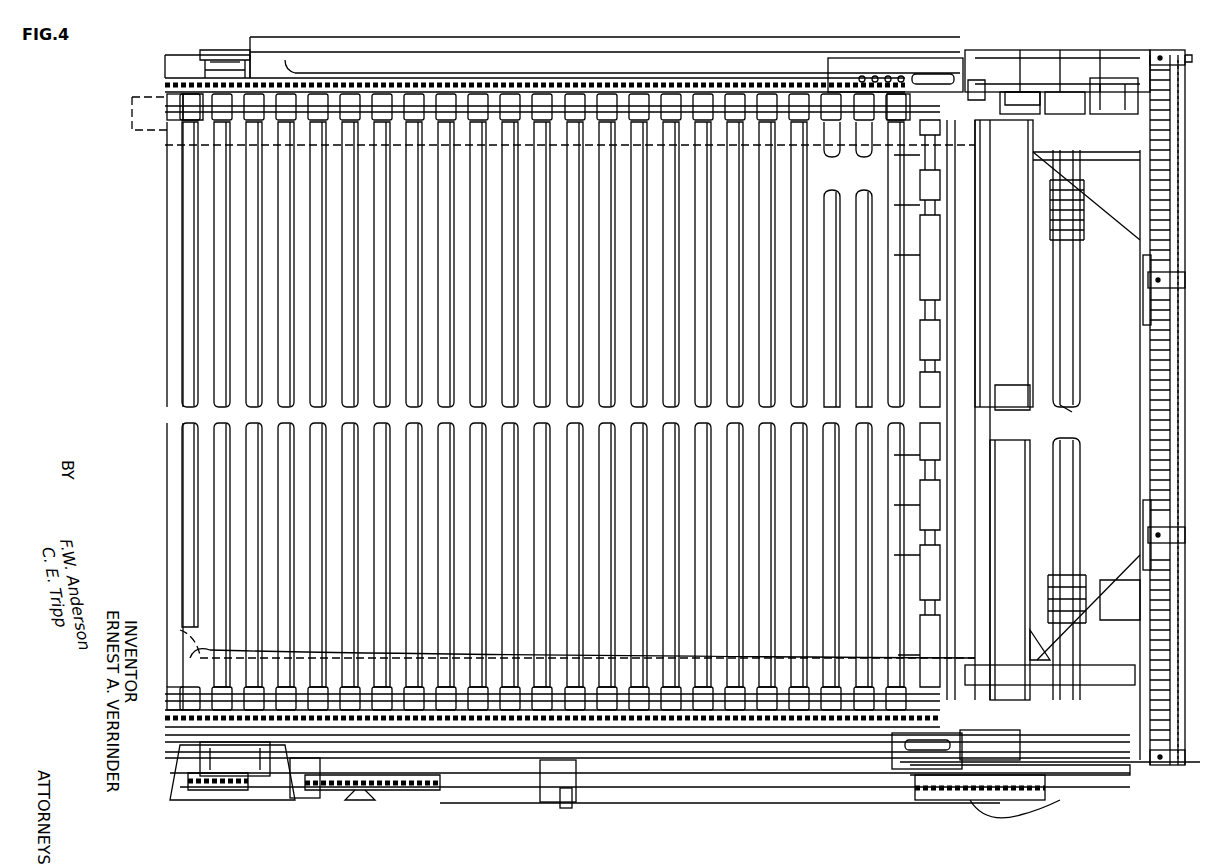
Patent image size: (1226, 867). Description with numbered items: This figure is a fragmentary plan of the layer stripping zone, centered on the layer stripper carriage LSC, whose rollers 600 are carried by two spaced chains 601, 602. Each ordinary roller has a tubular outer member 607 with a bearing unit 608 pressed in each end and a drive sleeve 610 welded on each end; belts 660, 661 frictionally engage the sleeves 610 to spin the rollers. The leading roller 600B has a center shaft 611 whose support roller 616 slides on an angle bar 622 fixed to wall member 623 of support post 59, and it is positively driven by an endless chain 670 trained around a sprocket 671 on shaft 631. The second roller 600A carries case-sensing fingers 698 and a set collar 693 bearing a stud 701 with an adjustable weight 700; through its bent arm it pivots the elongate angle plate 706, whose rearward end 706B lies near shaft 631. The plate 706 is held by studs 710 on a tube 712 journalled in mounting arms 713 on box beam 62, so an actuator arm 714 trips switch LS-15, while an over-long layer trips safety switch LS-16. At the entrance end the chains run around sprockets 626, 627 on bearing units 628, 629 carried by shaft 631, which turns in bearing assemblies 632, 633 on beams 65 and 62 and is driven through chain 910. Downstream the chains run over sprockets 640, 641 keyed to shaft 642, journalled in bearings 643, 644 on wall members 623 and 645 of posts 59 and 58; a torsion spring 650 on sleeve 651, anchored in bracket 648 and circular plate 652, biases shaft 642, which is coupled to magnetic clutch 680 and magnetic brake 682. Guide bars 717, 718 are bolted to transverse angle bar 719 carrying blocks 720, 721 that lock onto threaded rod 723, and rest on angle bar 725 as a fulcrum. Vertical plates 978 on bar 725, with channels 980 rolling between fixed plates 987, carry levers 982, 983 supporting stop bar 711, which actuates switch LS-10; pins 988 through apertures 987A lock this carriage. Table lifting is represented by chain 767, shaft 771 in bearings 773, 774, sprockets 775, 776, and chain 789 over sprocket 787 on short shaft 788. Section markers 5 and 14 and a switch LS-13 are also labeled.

The rollers 600 is at (600, 430).
The second roller 600A is at (872, 426).
The leading roller 600B is at (935, 424).
The tubular outer member 607 is at (370, 433).
The bearing unit 608 is at (418, 95).
The cylindrical drive sleeve 610 is at (605, 100).
The chain 601 is at (660, 100).
The beam 65 is at (738, 55).
The bearing assembly 632 is at (235, 52).
The bearing unit 628 is at (208, 70).
The sprocket 626 is at (195, 84).
The guide bar 717 is at (132, 125).
The belt 660 is at (200, 122).
The layer stripper carriage LSC is at (180, 237).
The fixed spaced plates 987 is at (845, 60).
The aligned apertures 987A is at (870, 76).
The set collar 693 is at (897, 95).
The pin 988 is at (935, 78).
The bearing 774 is at (1012, 58).
The channel 980 is at (972, 80).
The shaft 771 is at (1025, 92).
The vertical wall member 623 is at (1030, 75).
The support post 59 is at (1085, 62).
The bearing 643 is at (1085, 80).
The block 720 is at (1150, 52).
The vertical plates 978 is at (1020, 105).
The sprocket 640 is at (1068, 105).
The magnetic brake 682 is at (1110, 100).
The angle bar 622 is at (970, 120).
The lever 983 is at (1040, 118).
The circular plate 652 is at (1080, 160).
The weight 700 is at (870, 125).
The stud 701 is at (876, 125).
The support roller 616 is at (953, 125).
The center shaft 611 is at (940, 180).
The case-sensing fingers 698 is at (905, 255).
The torsion spring 650 is at (1078, 196).
The transverse angle bar 719 is at (1148, 268).
The block 721 is at (1143, 288).
The sleeve 651 is at (1072, 320).
The transverse angle bar 725 is at (1004, 410).
The stop bar 711 is at (978, 445).
The shaft 642 is at (1072, 412).
The threaded transverse rod 723 is at (1158, 440).
The magnetic clutch 680 is at (1035, 640).
The fixed bracket 648 is at (1128, 595).
The guide bar 718 is at (185, 640).
The belt 661 is at (195, 672).
The sprocket 671 is at (195, 730).
The sprocket 627 is at (200, 740).
The bearing unit 629 is at (205, 750).
The bearing assembly 633 is at (228, 748).
The rearward end 706B is at (228, 788).
The chain 910 is at (195, 795).
The shaft 631 is at (215, 792).
The mounting arms 713 is at (270, 790).
The studs 710 is at (303, 798).
The safety switch LS-16 is at (335, 740).
The chain 602 is at (435, 730).
The sprocket 787 is at (355, 798).
The short shaft 788 is at (390, 790).
The chain 789 is at (445, 790).
The switch LS-15 is at (560, 798).
The actuator arm 714 is at (574, 800).
The elongate angle plate 706 is at (585, 750).
The endless chain 670 is at (655, 760).
The tube 712 is at (765, 760).
The section line 14 is at (787, 760).
The limit switch LS-13 is at (895, 745).
The box beam 62 is at (910, 792).
The vertical wall member 645 is at (955, 785).
The chain 767 is at (975, 810).
The sprocket 775 is at (1060, 805).
The sprocket 776 is at (1065, 800).
The bearing 644 is at (1070, 778).
The vertical post 58 is at (1165, 770).
The section line 5 is at (1201, 775).
The switch LS-10 is at (1000, 700).
The lever 982 is at (1005, 712).
The sprocket 641 is at (1060, 712).
The bearing 773 is at (990, 737).